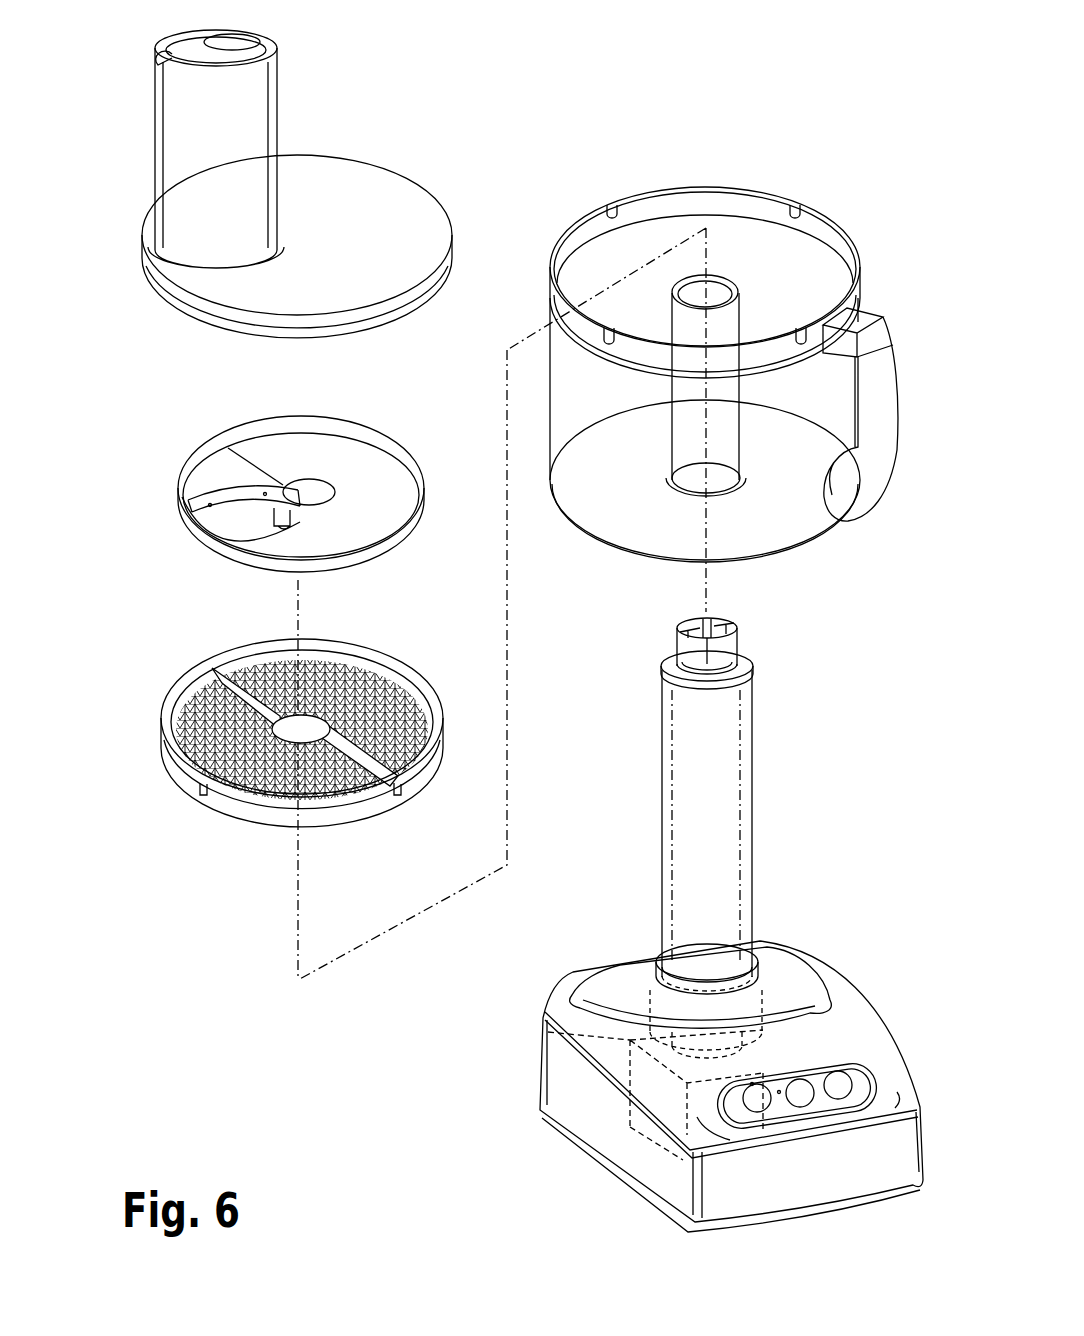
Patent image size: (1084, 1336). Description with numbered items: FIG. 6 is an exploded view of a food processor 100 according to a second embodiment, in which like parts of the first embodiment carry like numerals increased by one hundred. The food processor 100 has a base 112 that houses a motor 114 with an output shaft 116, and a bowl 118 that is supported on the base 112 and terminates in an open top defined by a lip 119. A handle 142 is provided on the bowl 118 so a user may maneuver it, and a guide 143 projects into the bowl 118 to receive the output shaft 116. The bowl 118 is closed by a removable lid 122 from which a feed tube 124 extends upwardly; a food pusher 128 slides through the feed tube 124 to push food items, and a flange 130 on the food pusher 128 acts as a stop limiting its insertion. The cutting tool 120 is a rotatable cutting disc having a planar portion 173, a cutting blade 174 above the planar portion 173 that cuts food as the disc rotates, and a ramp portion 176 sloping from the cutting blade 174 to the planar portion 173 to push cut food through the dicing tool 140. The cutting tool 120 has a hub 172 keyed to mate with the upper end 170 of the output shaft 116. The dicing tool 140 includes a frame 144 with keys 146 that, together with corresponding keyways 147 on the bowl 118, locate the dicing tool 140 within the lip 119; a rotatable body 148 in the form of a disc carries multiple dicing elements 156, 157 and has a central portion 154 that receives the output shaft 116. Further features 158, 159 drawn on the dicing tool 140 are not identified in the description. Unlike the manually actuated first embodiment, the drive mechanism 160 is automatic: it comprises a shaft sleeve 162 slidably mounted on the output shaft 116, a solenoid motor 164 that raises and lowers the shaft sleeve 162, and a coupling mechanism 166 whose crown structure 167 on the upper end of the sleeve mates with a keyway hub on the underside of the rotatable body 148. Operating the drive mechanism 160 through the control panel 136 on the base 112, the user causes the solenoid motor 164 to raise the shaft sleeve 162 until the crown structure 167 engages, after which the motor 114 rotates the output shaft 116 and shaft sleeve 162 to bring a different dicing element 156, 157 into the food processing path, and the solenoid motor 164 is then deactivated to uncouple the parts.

The food processor 100 is at (636, 30).
The base 112 is at (704, 914).
The motor 114 is at (660, 1102).
The output shaft 116 is at (695, 787).
The bowl 118 is at (754, 370).
The lip 119 is at (746, 262).
The cutting tool 120 is at (266, 480).
The lid 122 is at (262, 179).
The feed tube 124 is at (213, 144).
The food pusher 128 is at (252, 108).
The flange 130 is at (160, 57).
The control panel 136 is at (843, 1087).
The dicing tool 140 is at (292, 754).
The handle 142 is at (886, 360).
The guide 143 is at (722, 330).
The frame 144 is at (240, 808).
The keys 146 is at (197, 798).
The keyways 147 is at (621, 207).
The rotatable body 148 is at (367, 770).
The central portion 154 is at (292, 754).
The dicing element 156 is at (177, 704).
The dicing element 157 is at (315, 727).
The grating teeth 158 is at (178, 734).
The grating openings 159 is at (182, 756).
The drive mechanism 160 is at (656, 969).
The shaft sleeve 162 is at (661, 894).
The solenoid motor 164 is at (548, 1032).
The coupling mechanism 166 is at (668, 648).
The crown structure 167 is at (753, 666).
The upper end 170 is at (723, 623).
The hub 172 is at (272, 546).
The planar portion 173 is at (353, 458).
The cutting blade 174 is at (236, 512).
The ramp portion 176 is at (218, 468).